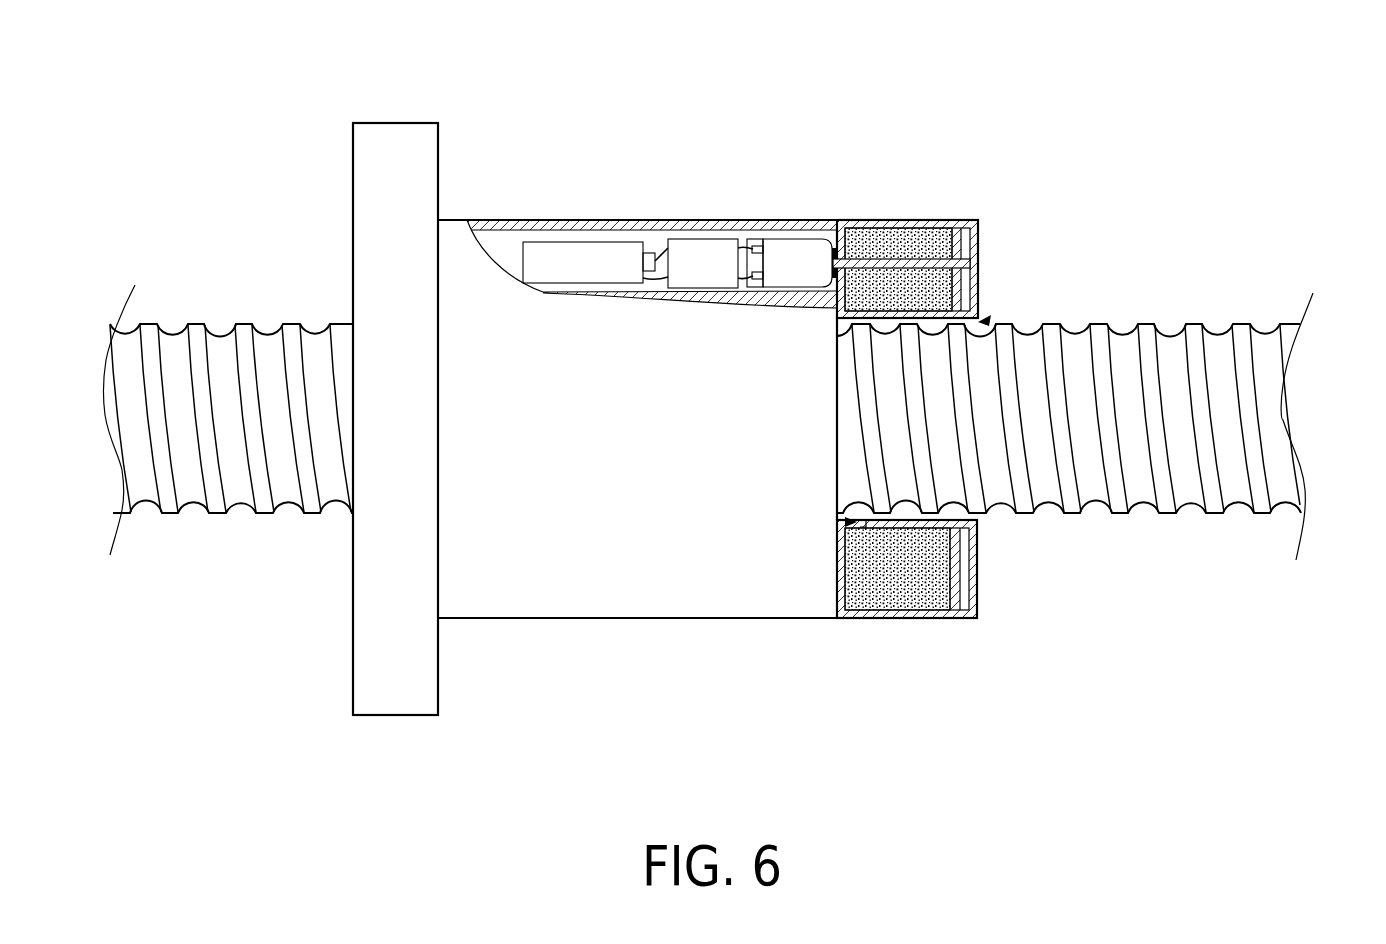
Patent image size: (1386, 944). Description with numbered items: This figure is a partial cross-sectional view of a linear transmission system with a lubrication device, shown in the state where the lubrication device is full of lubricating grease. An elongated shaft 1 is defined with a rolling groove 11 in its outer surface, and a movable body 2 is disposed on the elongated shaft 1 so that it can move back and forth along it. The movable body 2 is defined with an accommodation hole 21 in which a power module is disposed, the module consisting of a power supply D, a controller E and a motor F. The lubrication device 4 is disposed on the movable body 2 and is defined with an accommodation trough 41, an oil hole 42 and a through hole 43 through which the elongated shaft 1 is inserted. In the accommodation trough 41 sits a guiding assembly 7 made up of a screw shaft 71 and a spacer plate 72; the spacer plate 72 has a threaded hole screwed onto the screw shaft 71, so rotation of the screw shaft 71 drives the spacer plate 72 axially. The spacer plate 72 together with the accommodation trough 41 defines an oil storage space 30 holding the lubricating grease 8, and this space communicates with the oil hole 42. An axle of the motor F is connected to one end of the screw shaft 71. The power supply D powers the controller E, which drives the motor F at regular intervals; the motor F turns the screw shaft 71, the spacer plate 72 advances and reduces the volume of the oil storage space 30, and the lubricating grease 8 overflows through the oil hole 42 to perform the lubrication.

The elongated shaft 1 is at (739, 366).
The rolling groove 11 is at (1268, 350).
The movable body 2 is at (383, 205).
The accommodation hole 21 is at (503, 250).
The power supply D is at (587, 250).
The controller E is at (710, 250).
The motor F is at (802, 247).
The lubrication device 4 is at (946, 166).
The guiding assembly 7 is at (907, 249).
The screw shaft 71 is at (935, 262).
The spacer plate 72 is at (955, 245).
The through hole 43 is at (986, 320).
The oil hole 42 is at (850, 522).
The lubricating grease 8 is at (928, 572).
The oil storage space 30 is at (975, 632).
The accommodation trough 41 is at (967, 600).